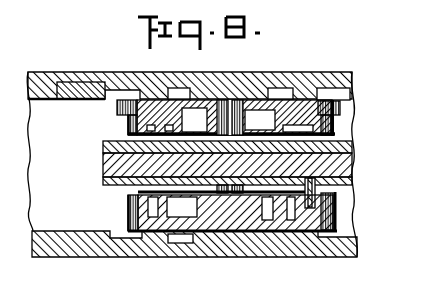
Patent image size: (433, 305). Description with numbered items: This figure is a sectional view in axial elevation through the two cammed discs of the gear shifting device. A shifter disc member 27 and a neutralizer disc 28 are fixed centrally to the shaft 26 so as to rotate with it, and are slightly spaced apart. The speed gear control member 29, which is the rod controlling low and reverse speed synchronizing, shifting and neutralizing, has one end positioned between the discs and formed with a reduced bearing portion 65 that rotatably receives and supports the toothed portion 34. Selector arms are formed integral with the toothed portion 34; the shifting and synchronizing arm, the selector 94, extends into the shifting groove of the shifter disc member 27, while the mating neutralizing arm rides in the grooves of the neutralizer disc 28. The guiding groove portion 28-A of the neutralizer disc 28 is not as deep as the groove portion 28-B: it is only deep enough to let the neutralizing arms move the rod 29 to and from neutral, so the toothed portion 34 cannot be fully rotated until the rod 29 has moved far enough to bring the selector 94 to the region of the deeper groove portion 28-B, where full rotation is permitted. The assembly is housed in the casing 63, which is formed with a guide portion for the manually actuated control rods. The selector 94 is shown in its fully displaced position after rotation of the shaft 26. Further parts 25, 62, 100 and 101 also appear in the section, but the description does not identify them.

The bushing / bearing sleeve 25 is at (339, 108).
The shaft 26 is at (231, 117).
The shifter disc member 27 is at (334, 222).
The neutralizer disc 28 is at (341, 100).
The guiding groove portion 28-A is at (140, 128).
The groove portion 28-B is at (194, 120).
The speed gear control member 29 is at (110, 172).
The toothed portion 34 is at (354, 176).
The upper platen 62 is at (304, 80).
The casing 63 is at (294, 250).
The reduced bearing portion 65 is at (353, 151).
The selector arm 94 is at (316, 189).
The recess in upper platen 100 is at (177, 90).
The recess in lower platen 101 is at (180, 238).